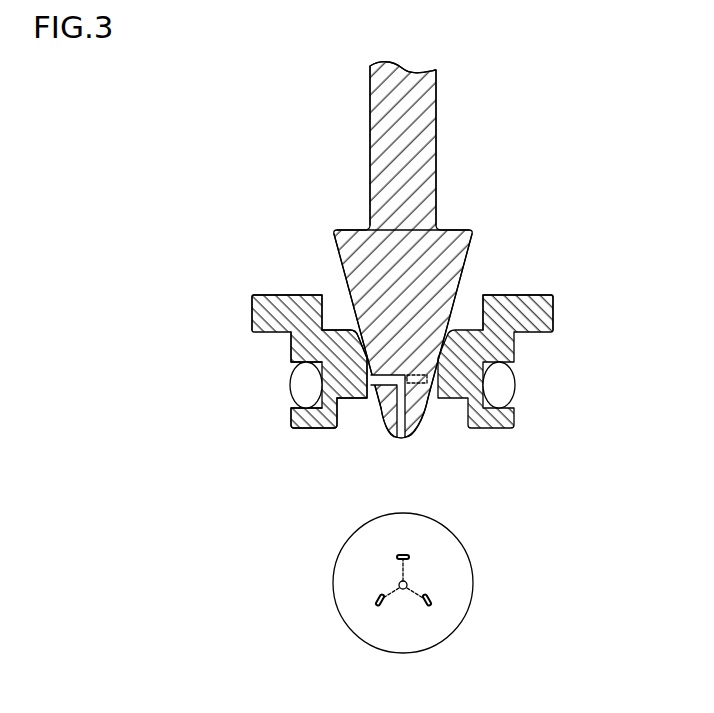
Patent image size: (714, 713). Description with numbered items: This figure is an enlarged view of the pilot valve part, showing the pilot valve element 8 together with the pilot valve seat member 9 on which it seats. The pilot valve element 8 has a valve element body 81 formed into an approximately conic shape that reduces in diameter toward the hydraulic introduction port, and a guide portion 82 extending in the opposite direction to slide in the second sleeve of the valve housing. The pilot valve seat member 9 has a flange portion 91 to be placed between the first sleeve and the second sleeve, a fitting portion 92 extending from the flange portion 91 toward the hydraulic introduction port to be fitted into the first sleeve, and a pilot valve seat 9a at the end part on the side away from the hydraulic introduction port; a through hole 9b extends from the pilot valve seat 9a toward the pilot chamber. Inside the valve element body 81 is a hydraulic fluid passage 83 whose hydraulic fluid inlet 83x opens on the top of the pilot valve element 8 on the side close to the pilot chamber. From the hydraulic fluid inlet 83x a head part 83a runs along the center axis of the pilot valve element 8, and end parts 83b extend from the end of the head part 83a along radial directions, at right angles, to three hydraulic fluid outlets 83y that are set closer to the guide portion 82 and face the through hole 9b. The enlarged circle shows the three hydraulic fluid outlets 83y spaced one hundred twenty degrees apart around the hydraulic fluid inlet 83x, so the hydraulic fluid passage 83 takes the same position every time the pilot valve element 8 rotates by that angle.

The pilot valve element 8 is at (357, 157).
The guide portion 82 is at (418, 119).
The valve element body 81 is at (451, 252).
The hydraulic fluid passage 83 is at (392, 418).
The head part 83a is at (420, 426).
The end parts 83b is at (374, 398).
The hydraulic fluid inlet 83x is at (406, 440).
The hydraulic fluid outlets 83y is at (403, 555).
The pilot valve seat member 9 is at (572, 302).
The pilot valve seat 9a is at (366, 347).
The through hole 9b is at (363, 401).
The flange portion 91 is at (540, 318).
The fitting portion 92 is at (345, 387).